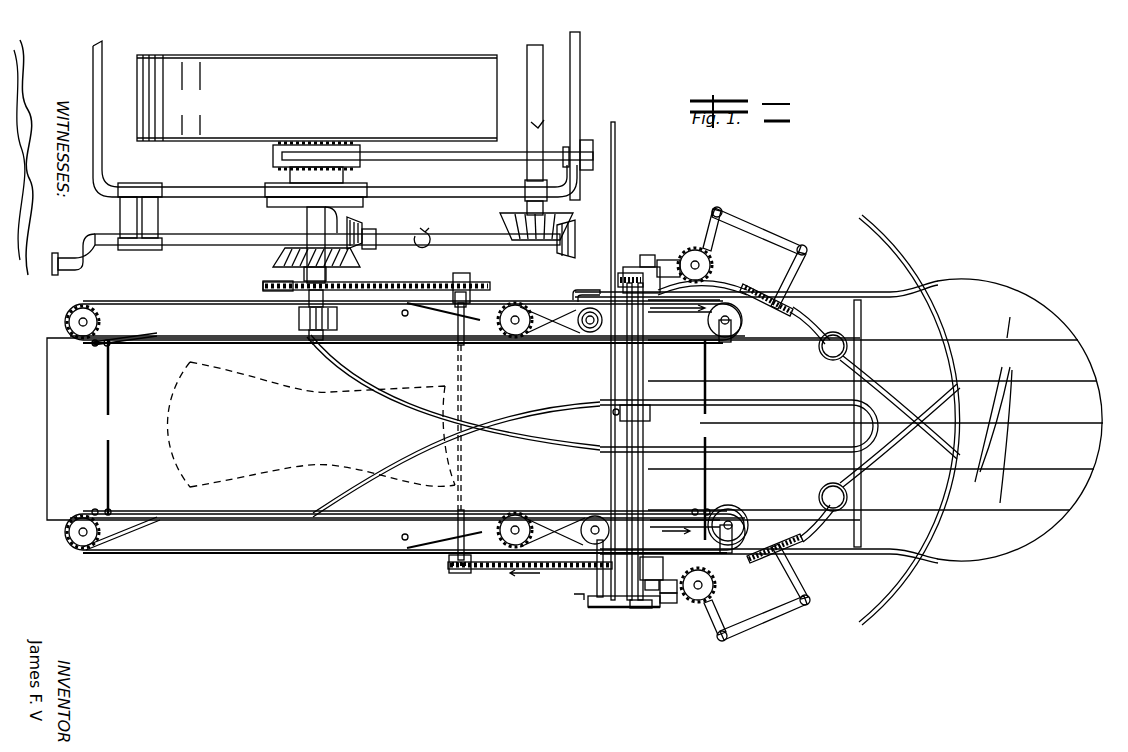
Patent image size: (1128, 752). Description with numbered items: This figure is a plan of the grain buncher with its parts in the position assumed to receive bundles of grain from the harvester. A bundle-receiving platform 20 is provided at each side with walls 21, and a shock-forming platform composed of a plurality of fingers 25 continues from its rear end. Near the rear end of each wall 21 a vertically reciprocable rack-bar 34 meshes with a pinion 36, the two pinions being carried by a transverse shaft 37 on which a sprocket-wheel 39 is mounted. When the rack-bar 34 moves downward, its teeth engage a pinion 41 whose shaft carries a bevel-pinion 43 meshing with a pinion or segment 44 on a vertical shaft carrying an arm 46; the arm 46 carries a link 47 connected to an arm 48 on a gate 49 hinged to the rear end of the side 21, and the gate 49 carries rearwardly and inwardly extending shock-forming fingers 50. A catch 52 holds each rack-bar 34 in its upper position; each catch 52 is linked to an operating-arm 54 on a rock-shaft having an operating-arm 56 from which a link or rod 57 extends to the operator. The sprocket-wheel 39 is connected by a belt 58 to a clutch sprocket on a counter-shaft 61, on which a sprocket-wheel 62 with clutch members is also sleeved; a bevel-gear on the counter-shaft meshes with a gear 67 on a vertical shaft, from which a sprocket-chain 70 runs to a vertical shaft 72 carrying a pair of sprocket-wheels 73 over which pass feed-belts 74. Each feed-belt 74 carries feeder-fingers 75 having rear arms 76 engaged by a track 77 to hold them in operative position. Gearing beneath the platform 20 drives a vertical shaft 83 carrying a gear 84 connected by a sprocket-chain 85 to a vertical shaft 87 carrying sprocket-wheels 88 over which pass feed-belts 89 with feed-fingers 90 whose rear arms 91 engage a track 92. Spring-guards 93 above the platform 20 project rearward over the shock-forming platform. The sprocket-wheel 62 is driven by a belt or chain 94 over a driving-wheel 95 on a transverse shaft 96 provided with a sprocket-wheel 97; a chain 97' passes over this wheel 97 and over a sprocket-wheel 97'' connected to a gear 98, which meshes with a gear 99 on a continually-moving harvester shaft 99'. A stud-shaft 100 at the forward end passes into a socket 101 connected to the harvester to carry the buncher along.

The bundle-receiving platform 20 is at (58, 397).
The walls 21 is at (143, 342).
The fingers 25 is at (1008, 400).
The rack-bar 34 is at (672, 260).
The pinion 36 is at (645, 266).
The transverse shaft 37 is at (648, 608).
The sprocket-wheel 39 is at (610, 609).
The pinion 41 is at (622, 272).
The bevel-pinion 43 is at (703, 583).
The pinion or segment 44 is at (700, 262).
The arm 46 is at (712, 214).
The link 47 is at (762, 232).
The arm 48 is at (790, 278).
The gate 49 is at (768, 312).
The shock-forming fingers 50 is at (930, 432).
The catch 52 is at (655, 318).
The operating-arm 54 is at (650, 412).
The operating-arm 56 is at (613, 416).
The link or rod 57 is at (615, 150).
The belt 58 is at (574, 594).
The counter-shaft 61 is at (597, 582).
The sprocket-wheel 62 is at (583, 534).
The gear 67 is at (590, 516).
The sprocket-chain 70 is at (670, 520).
The vertical shaft 72 is at (731, 522).
The sprocket-wheels 73 is at (745, 518).
The feed-belt 74 is at (206, 554).
The feeder-fingers 75 is at (110, 476).
The rear arm 76 is at (402, 537).
The track 77 is at (246, 516).
The vertical shaft 83 is at (573, 302).
The gear 84 is at (600, 332).
The sprocket-chain 85 is at (692, 334).
The vertical shaft 87 is at (745, 290).
The sprocket-wheels 88 is at (732, 332).
The feed-belts 89 is at (211, 302).
The feed-fingers 90 is at (106, 399).
The rear arms 91 is at (95, 346).
The track 92 is at (128, 318).
The spring-guards 93 is at (528, 432).
The belt or chain 94 is at (488, 571).
The driving-wheel 95 is at (455, 574).
The transverse shaft 96 is at (468, 292).
The sprocket-wheel 97 is at (376, 279).
The chain 97' is at (438, 280).
The sprocket-wheel 97'' is at (262, 276).
The gear 98 is at (293, 247).
The gear 99 is at (322, 207).
The shaft 99' is at (513, 233).
The stud-shaft 100 is at (308, 332).
The socket 101 is at (299, 318).